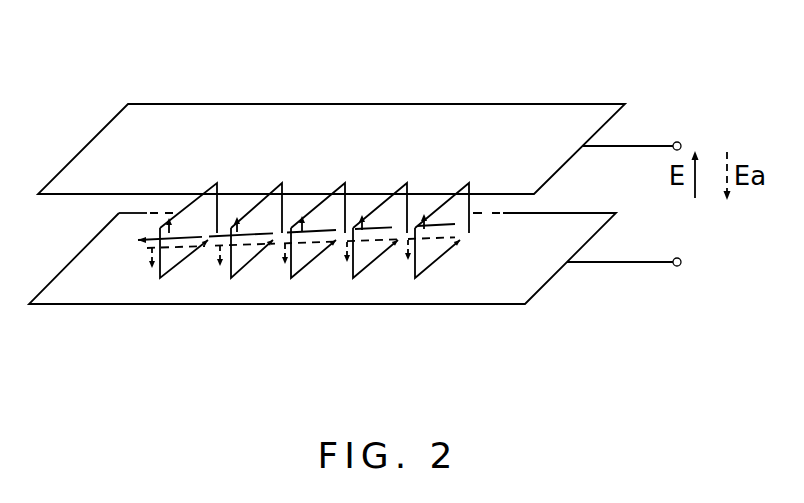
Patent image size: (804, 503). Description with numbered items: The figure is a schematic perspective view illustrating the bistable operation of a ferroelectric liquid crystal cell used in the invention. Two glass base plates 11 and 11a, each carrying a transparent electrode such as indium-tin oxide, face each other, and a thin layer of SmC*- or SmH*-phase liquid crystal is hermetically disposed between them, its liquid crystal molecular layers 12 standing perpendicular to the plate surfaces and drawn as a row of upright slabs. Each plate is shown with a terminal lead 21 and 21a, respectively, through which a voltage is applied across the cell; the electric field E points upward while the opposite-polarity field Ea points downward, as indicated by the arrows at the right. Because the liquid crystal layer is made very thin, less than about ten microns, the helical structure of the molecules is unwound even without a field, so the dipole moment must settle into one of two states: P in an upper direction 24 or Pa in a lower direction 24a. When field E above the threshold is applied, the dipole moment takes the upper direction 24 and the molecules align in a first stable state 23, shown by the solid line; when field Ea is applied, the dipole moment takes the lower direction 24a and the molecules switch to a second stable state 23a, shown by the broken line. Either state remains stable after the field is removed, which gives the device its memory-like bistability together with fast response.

The base plate 11 is at (571, 108).
The base plate 11a is at (358, 258).
The liquid crystal molecular layers 12 is at (467, 185).
The upper terminal 21 is at (677, 141).
The lower terminal 21a is at (677, 266).
The first stable state 23 is at (197, 234).
The second stable state 23a is at (173, 254).
The upper direction 24 is at (168, 228).
The lower direction 24a is at (152, 262).